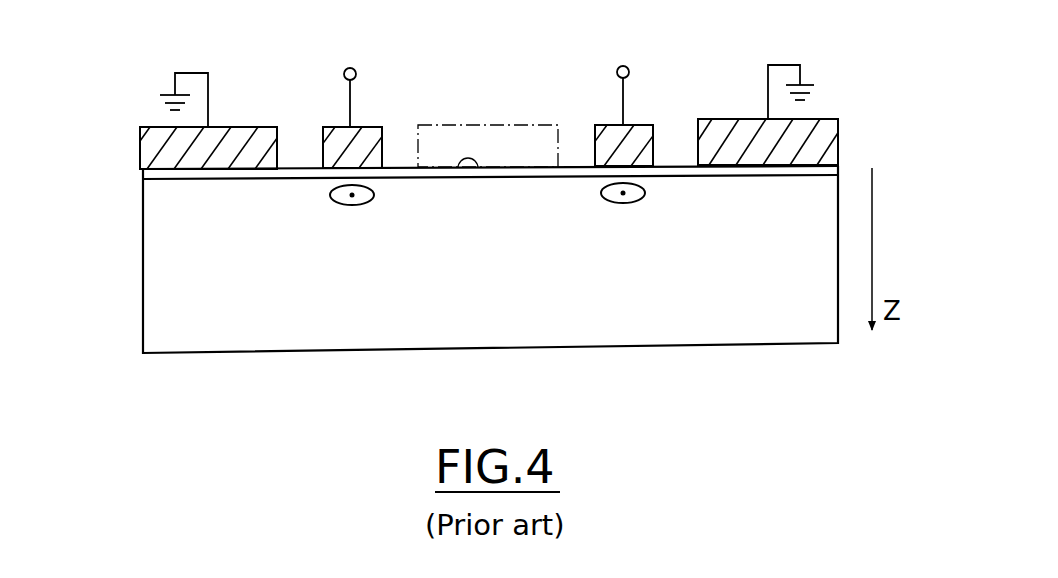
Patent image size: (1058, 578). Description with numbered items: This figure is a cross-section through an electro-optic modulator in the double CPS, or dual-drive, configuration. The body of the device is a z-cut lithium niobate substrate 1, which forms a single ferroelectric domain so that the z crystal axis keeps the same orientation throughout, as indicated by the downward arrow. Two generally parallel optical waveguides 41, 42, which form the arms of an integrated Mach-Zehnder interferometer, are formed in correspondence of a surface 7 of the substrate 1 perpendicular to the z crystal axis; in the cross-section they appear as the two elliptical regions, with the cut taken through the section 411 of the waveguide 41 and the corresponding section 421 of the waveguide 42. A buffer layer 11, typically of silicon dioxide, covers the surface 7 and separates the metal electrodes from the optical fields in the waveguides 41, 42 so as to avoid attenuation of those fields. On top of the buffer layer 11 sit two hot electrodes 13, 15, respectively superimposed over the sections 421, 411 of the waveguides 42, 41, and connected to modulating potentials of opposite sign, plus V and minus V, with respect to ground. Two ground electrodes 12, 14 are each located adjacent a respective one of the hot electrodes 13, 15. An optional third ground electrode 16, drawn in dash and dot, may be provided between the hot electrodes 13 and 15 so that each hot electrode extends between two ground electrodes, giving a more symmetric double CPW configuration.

The substrate 1 is at (202, 335).
The buffer layer 11 is at (397, 166).
The surface 7 is at (478, 172).
The ground electrode 14 is at (150, 153).
The hot electrode 15 is at (332, 133).
The third ground electrode 16 is at (513, 125).
The hot electrode 13 is at (633, 140).
The ground electrode 12 is at (818, 140).
The optical waveguide 41 is at (328, 199).
The section of waveguide 411 is at (358, 204).
The optical waveguide 42 is at (648, 195).
The section of waveguide 421 is at (621, 203).